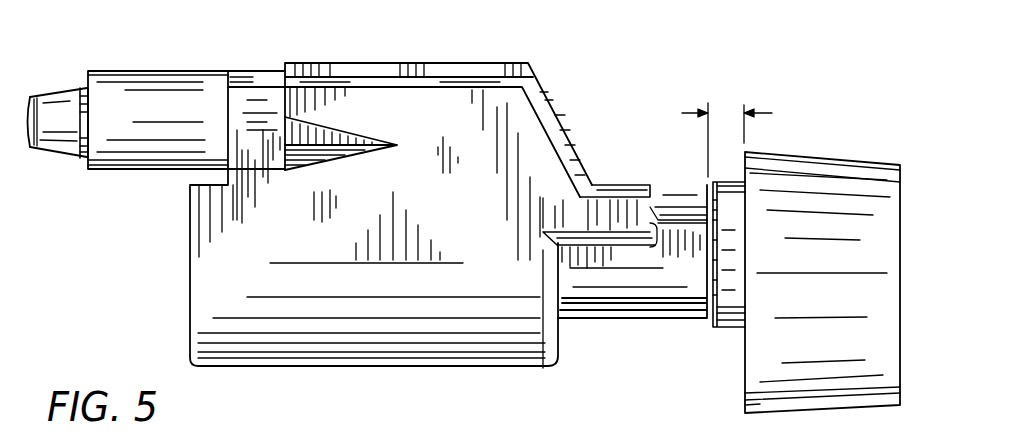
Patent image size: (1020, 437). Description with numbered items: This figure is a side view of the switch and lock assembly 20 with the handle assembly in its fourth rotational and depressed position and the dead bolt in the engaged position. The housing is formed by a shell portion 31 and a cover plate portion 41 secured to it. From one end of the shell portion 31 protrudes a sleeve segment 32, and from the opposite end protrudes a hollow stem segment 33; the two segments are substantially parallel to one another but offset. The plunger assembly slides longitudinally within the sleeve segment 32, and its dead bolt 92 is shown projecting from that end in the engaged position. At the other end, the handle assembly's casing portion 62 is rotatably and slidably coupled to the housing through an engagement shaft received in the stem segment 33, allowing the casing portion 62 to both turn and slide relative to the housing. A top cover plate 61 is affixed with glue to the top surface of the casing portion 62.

The switch and lock assembly 20 is at (694, 79).
The shell portion 31 is at (312, 347).
The sleeve segment 32 is at (153, 172).
The stem segment 33 is at (638, 313).
The cover plate portion 41 is at (523, 64).
The top cover plate 61 is at (902, 178).
The casing portion 62 is at (755, 389).
The dead bolt 92 is at (70, 153).